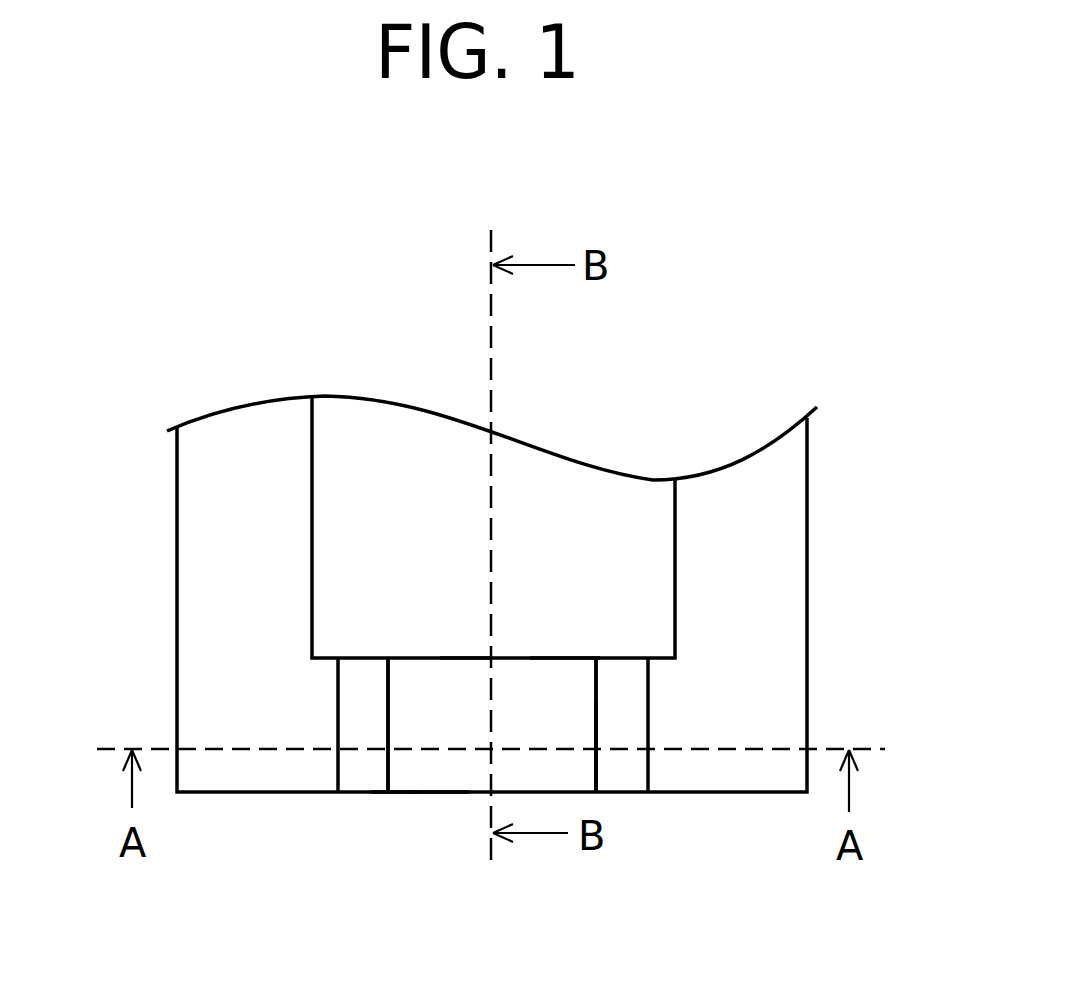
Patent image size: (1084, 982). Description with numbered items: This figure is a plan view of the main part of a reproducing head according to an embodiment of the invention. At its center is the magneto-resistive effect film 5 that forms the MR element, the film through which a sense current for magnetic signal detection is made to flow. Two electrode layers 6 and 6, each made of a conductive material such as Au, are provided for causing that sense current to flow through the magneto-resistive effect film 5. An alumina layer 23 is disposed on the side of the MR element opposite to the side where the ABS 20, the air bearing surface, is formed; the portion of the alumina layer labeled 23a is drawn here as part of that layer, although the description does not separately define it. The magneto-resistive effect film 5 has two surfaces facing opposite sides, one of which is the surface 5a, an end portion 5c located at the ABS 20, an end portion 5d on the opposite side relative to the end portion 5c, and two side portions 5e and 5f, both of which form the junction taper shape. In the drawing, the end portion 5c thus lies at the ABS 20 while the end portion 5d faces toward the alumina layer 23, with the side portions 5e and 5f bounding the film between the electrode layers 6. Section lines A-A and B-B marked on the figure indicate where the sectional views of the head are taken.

The electrode layer 6 is at (203, 518).
The alumina layer 23 is at (370, 450).
The bottom surface of terminal body 23a is at (462, 658).
The magneto-resistive effect film 5 is at (598, 685).
The surface 5a is at (552, 717).
The end portion 5d is at (560, 657).
The side portion 5e is at (388, 730).
The side portion 5f is at (596, 735).
The end portion 5c is at (398, 793).
The ABS (Air Bearing Surface) 20 is at (435, 795).